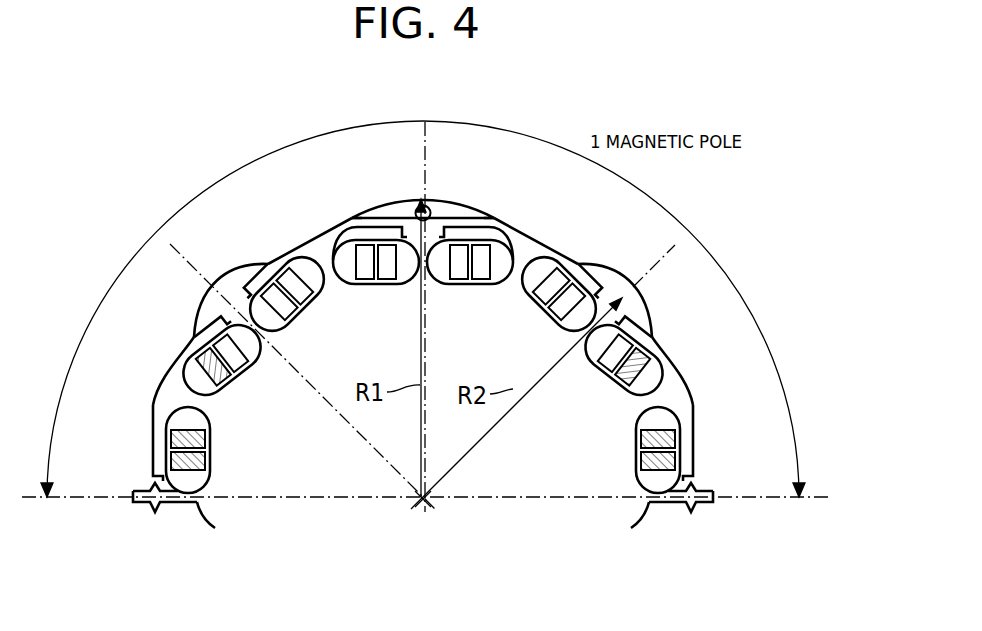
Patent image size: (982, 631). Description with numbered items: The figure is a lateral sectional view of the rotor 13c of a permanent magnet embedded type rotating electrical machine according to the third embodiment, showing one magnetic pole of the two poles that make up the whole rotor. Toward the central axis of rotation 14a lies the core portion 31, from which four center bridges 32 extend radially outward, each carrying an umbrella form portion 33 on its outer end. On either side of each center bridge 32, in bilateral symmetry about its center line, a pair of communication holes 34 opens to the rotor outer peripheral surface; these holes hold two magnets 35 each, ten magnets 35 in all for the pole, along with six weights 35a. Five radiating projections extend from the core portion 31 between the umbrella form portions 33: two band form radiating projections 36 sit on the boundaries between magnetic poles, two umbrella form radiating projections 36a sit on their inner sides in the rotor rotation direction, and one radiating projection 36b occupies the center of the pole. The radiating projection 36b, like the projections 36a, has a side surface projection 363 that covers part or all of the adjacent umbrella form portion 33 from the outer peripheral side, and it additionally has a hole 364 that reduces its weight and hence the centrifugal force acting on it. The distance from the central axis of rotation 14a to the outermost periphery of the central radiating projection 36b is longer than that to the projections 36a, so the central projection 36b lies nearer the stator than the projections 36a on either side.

The rotor 13c is at (753, 215).
The core portion 31 is at (407, 441).
The center bridge 32 is at (297, 237).
The umbrella form portion 33 is at (322, 238).
The communication hole 34 is at (345, 258).
The magnet 35 is at (307, 298).
The weight 35a is at (206, 461).
The radiating projection 36 is at (152, 490).
The umbrella form radiating projection 36a is at (212, 310).
The umbrella form radiating projection 36b is at (441, 212).
The side surface projection 363 is at (370, 217).
The hole 364 is at (411, 209).
The central axis of rotation 14a is at (422, 500).